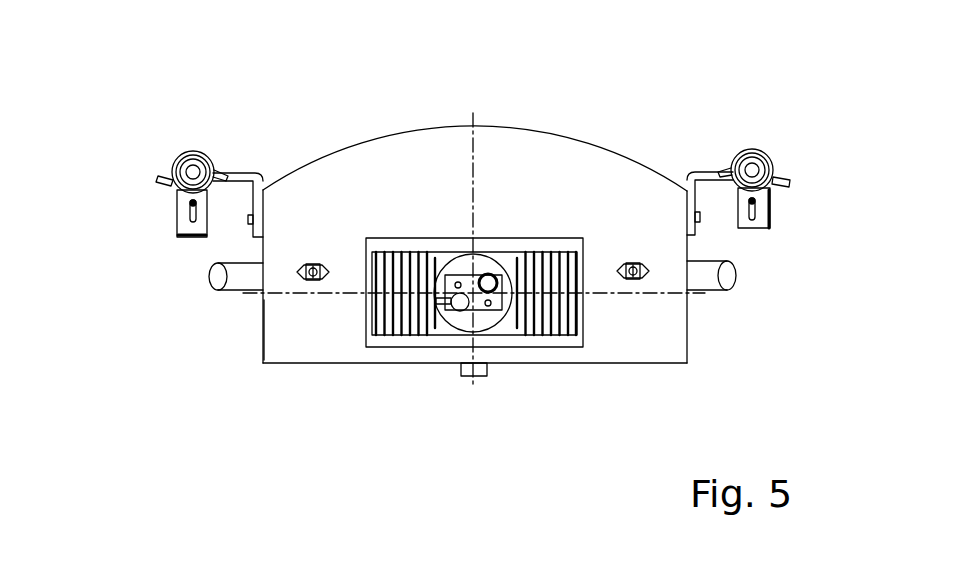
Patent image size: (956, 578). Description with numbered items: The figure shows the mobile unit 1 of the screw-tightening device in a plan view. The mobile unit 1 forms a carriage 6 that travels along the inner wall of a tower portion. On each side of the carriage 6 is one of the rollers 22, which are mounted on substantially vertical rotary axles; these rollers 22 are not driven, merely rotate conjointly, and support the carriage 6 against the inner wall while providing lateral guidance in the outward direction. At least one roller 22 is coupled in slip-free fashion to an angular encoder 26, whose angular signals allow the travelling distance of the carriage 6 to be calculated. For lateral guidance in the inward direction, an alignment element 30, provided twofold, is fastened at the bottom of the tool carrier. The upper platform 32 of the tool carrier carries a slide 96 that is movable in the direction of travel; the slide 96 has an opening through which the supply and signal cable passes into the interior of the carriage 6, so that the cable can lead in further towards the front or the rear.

The mobile unit 1 is at (647, 138).
The carriage 6 is at (298, 368).
The rollers 22 is at (182, 153).
The angular encoder 26 is at (771, 210).
The alignment element 30 is at (163, 177).
The upper platform 32 is at (297, 327).
The slide 96 is at (494, 316).